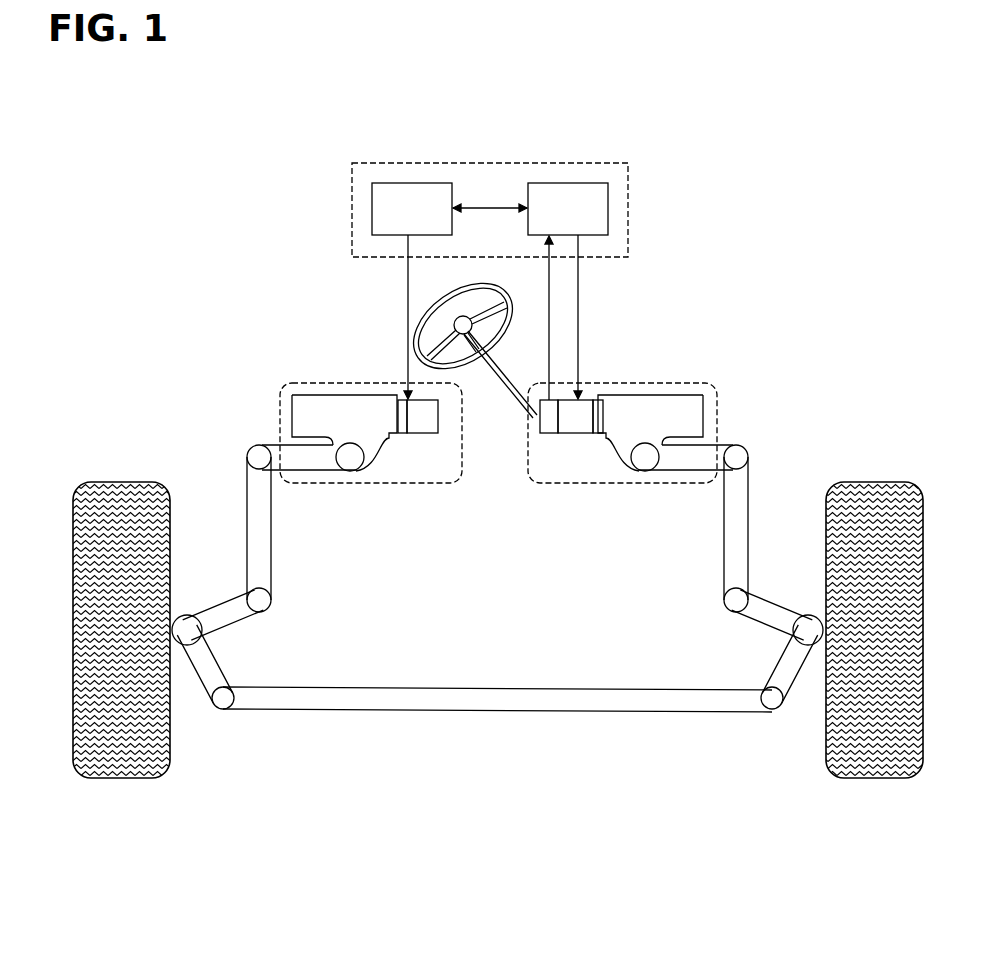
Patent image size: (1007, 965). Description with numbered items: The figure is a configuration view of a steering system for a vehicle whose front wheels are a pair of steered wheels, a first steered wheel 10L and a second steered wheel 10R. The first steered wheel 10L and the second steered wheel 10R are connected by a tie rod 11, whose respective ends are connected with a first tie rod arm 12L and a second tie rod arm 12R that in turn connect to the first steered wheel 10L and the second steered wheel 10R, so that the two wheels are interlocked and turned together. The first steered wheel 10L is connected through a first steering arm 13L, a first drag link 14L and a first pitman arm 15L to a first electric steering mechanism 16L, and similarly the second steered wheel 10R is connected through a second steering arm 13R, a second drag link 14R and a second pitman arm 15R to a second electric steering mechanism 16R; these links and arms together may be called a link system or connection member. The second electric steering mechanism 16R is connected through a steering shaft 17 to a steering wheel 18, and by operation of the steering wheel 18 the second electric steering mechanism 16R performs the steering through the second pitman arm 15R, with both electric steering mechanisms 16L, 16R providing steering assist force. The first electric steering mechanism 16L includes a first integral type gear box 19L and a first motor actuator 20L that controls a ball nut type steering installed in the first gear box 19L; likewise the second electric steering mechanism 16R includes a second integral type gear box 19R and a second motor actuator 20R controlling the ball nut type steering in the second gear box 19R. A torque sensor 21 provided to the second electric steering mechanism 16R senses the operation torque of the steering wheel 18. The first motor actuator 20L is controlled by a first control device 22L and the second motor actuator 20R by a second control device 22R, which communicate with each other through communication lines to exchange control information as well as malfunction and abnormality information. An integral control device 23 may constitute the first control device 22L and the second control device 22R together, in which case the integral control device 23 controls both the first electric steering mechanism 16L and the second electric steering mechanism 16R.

The first steered wheel 10L is at (122, 780).
The second steered wheel 10R is at (878, 780).
The tie rod 11 is at (510, 712).
The first tie rod arm 12L is at (226, 670).
The second tie rod arm 12R is at (775, 670).
The first steering arm 13L is at (218, 605).
The second steering arm 13R is at (783, 612).
The first drag link 14L is at (268, 575).
The second drag link 14R is at (726, 576).
The first pitman arm 15L is at (312, 462).
The second pitman arm 15R is at (685, 462).
The first electric steering mechanism 16L is at (280, 405).
The second electric steering mechanism 16R is at (718, 410).
The steering shaft 17 is at (505, 385).
The steering wheel 18 is at (513, 303).
The first integral type gear box 19L is at (345, 395).
The second integral type gear box 19R is at (652, 395).
The first motor actuator 20L is at (422, 425).
The second motor actuator 20R is at (575, 425).
The torque sensor 21 is at (548, 425).
The first control device 22L is at (407, 182).
The second control device 22R is at (565, 182).
The integral control device 23 is at (630, 208).